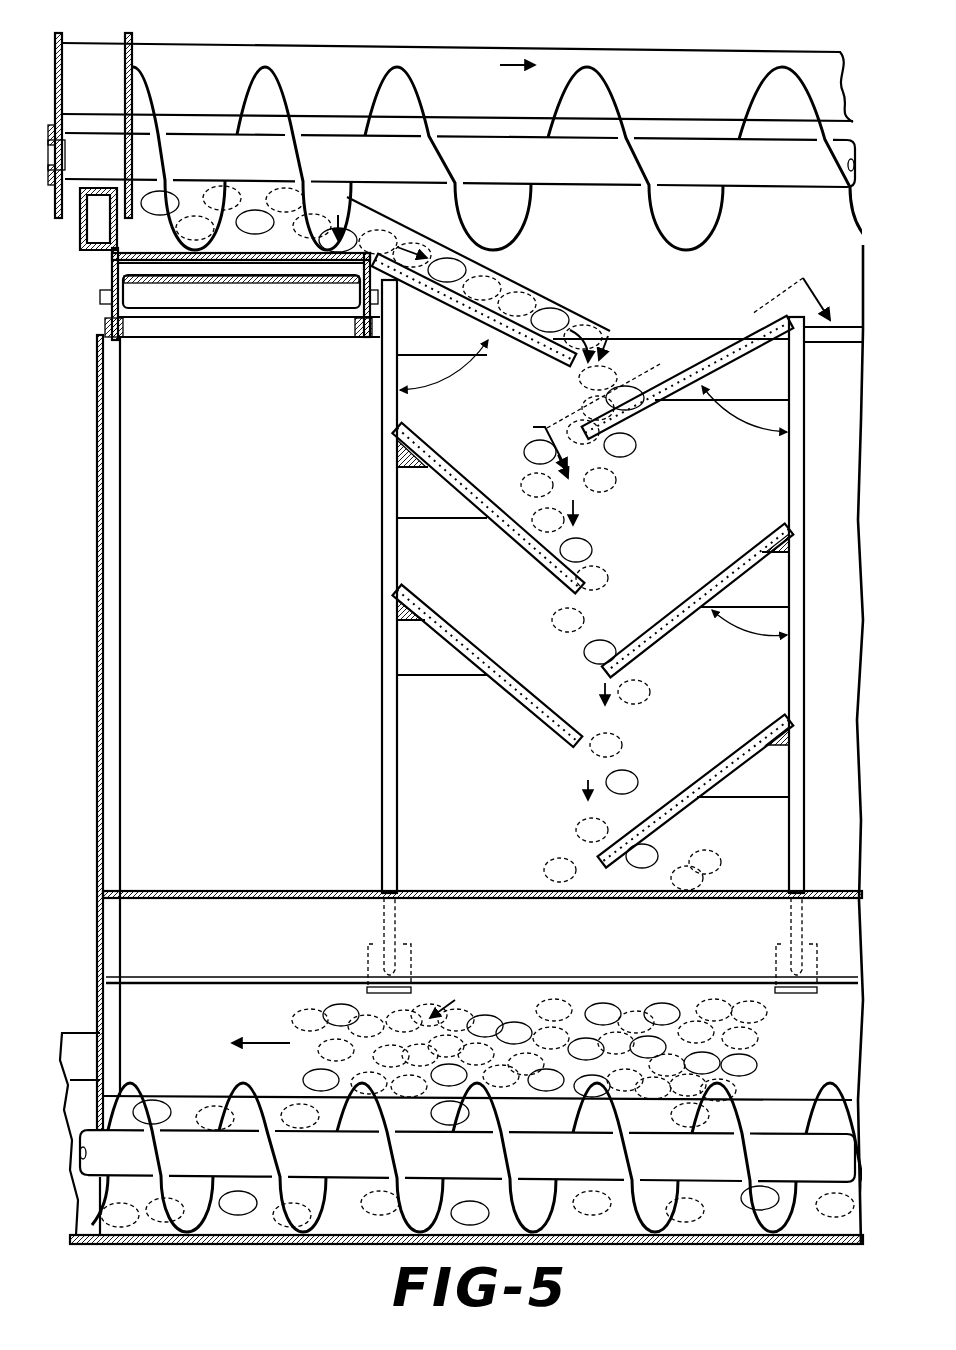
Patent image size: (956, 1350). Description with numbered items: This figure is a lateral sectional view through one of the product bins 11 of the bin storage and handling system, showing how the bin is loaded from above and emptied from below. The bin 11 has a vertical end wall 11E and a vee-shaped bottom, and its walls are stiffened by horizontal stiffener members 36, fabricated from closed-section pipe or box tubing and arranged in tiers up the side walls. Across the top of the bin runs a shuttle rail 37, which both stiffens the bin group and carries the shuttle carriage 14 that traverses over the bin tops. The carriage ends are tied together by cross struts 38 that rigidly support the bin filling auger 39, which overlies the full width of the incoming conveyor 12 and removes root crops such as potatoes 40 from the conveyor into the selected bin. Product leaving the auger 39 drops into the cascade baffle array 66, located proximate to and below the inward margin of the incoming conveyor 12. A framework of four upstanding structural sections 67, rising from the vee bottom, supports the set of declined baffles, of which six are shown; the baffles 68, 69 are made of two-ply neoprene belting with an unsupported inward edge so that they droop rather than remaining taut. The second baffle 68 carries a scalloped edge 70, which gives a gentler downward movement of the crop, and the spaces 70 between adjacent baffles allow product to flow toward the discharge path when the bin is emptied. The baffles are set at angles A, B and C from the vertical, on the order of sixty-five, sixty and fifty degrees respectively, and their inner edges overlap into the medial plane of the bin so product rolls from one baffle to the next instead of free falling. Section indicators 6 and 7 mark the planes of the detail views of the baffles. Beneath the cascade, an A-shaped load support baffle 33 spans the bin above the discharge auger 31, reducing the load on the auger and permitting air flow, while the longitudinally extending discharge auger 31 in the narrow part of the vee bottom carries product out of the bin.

The bin 11 is at (258, 580).
The vertical end wall 11E is at (100, 646).
The incoming conveyor 12 is at (113, 258).
The shuttle carriage 14 is at (137, 40).
The discharge auger 31 is at (728, 1092).
The load support baffle 33 is at (312, 893).
The stiffener member 36 is at (147, 330).
The shuttle rail 37 is at (112, 249).
The cross strut 38 is at (486, 30).
The bin filling auger 39 is at (623, 98).
The root crop 40 is at (542, 310).
The cascade baffle array 66 is at (672, 372).
The upstanding structural section 67 is at (382, 728).
The second baffle 68 is at (487, 303).
The baffle 69 is at (752, 333).
The scalloped edge 70 is at (478, 457).
The section line 6 is at (668, 361).
The section line 7 is at (484, 278).
The angle A is at (444, 373).
The angle B is at (744, 419).
The angle C is at (745, 641).